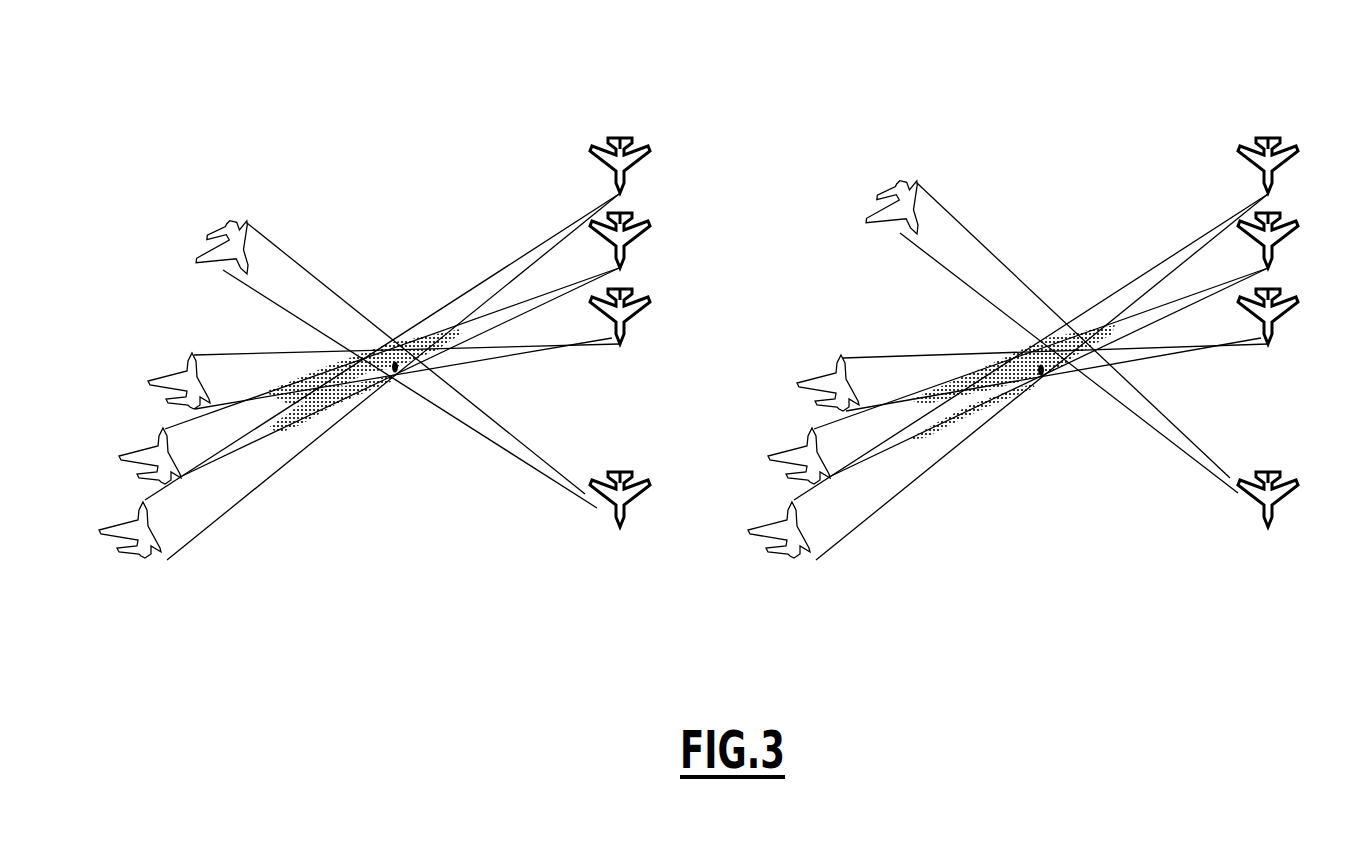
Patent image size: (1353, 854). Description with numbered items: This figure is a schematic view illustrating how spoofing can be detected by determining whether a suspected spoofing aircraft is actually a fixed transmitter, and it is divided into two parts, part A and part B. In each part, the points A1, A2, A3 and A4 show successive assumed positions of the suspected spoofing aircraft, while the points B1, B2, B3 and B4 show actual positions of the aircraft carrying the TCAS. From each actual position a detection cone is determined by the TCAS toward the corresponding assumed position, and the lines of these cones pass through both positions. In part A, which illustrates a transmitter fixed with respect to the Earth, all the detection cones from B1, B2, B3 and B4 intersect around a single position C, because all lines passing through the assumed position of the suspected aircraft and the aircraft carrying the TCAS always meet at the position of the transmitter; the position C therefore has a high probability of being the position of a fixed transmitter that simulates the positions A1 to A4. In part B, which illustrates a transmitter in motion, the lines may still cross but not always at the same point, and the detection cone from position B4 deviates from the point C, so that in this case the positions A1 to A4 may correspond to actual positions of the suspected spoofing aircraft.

The part A of FIG. 3 A is at (382, 323).
The part B of FIG. 3 B is at (1046, 323).
The assumed position of the suspected spoofing aircraft A1 is at (441, 530).
The assumed position of the suspected spoofing aircraft A2 is at (463, 456).
The assumed position of the suspected spoofing aircraft A3 is at (488, 382).
The assumed position of the suspected spoofing aircraft A4 is at (545, 232).
The actual position of the aircraft carrying the TCAS B1 is at (961, 165).
The actual position of the aircraft carrying the TCAS B2 is at (962, 240).
The actual position of the aircraft carrying the TCAS B3 is at (962, 316).
The actual position of the aircraft carrying the TCAS B4 is at (638, 499).
The position of intersection of the detection cones C is at (395, 385).